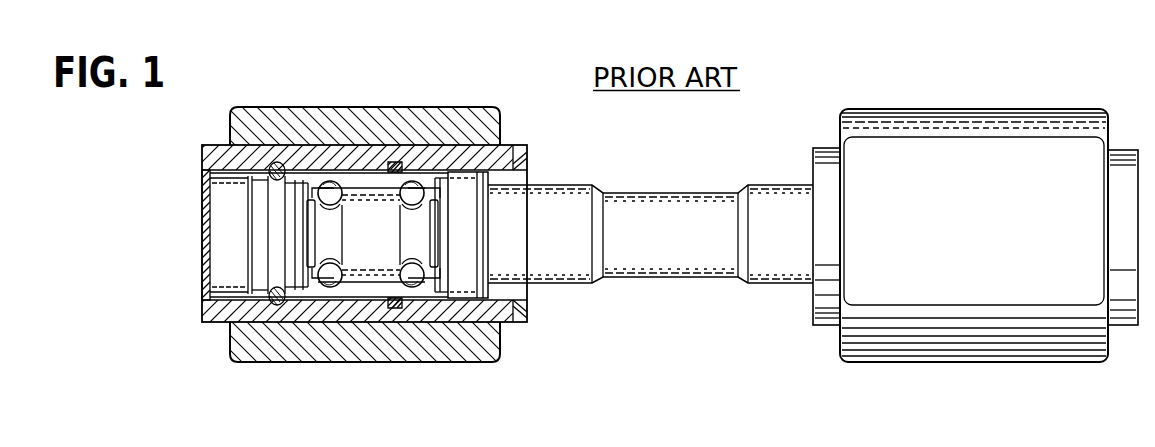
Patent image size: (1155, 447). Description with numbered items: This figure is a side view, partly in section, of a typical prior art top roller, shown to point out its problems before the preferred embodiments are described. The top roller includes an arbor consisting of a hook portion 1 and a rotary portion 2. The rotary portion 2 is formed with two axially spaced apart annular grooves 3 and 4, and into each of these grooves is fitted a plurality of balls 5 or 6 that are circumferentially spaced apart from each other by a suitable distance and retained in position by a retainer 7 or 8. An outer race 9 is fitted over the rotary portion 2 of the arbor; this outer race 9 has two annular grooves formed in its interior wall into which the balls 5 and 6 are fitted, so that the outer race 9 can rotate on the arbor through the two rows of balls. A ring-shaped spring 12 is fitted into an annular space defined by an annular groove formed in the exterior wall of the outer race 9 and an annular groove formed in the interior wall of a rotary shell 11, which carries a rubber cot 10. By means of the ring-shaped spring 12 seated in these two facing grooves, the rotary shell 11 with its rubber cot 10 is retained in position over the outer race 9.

The hook portion 1 is at (679, 205).
The rotary portion 2 is at (363, 255).
The annular groove 3 is at (417, 230).
The annular groove 4 is at (330, 230).
The balls 5 is at (410, 288).
The balls 6 is at (326, 288).
The retainer 7 is at (420, 183).
The retainer 8 is at (332, 181).
The outer race 9 is at (365, 177).
The rubber cot 10 is at (448, 352).
The rotary shell 11 is at (513, 160).
The ring-shaped spring 12 is at (386, 308).